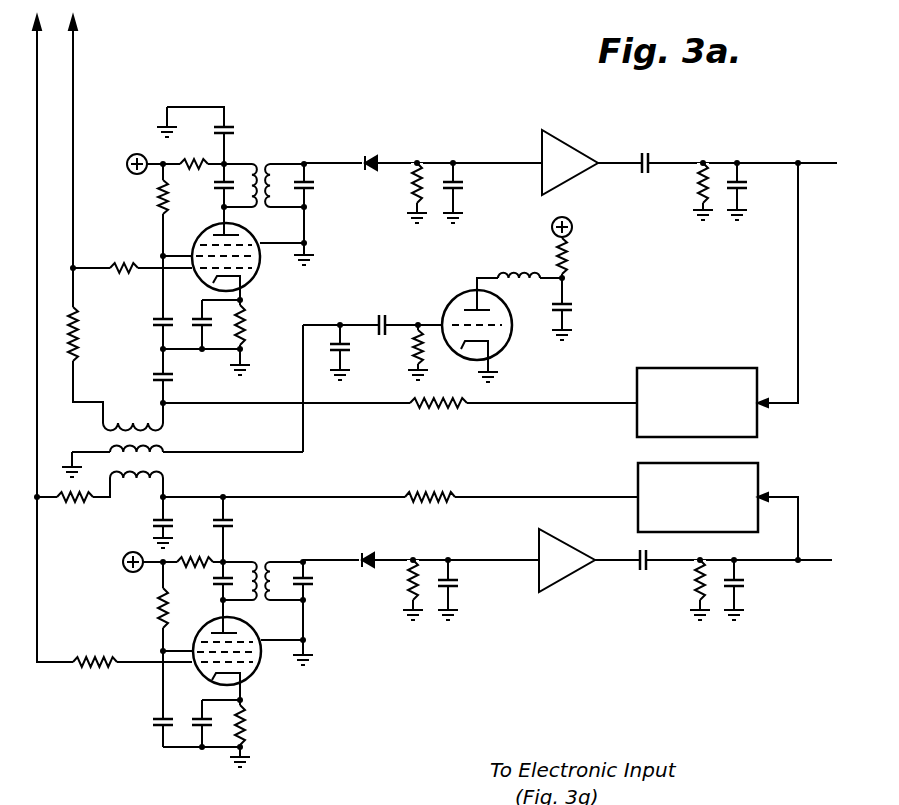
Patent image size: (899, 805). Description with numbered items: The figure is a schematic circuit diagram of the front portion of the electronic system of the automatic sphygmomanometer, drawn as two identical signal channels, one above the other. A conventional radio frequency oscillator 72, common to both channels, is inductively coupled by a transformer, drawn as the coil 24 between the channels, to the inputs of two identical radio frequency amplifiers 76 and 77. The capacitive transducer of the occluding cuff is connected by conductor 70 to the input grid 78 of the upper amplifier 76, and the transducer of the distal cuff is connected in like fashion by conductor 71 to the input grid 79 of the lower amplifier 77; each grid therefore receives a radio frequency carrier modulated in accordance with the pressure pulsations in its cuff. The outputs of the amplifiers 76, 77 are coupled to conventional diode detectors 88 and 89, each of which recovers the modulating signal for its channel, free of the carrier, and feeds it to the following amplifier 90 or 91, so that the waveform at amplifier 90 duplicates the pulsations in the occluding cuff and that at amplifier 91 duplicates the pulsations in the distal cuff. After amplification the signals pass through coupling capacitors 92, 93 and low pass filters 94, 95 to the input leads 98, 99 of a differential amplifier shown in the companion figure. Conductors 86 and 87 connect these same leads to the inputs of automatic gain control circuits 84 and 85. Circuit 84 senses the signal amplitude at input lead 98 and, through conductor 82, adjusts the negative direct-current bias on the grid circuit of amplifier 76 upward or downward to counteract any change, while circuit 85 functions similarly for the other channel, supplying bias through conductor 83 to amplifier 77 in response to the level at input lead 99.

The conductor 70 is at (73, 93).
The conductor 71 is at (37, 90).
The coupling coil 24 is at (160, 440).
The radio frequency oscillator 72 is at (584, 375).
The radio frequency amplifier 76 is at (322, 84).
The radio frequency amplifier 77 is at (224, 651).
The input grid 78 is at (248, 271).
The input grid 79 is at (245, 666).
The conductor 82 is at (372, 405).
The conductor 83 is at (371, 497).
The automatic gain control circuit 84 is at (746, 368).
The automatic gain control circuit 85 is at (758, 467).
The conductor 86 is at (798, 270).
The conductor 87 is at (799, 531).
The diode detector 88 is at (483, 141).
The diode detector 89 is at (477, 620).
The amplifier 90 is at (575, 142).
The amplifier 91 is at (560, 578).
The coupling capacitor 92 is at (650, 153).
The coupling capacitor 93 is at (648, 574).
The low pass filter 94 is at (750, 221).
The low pass filter 95 is at (748, 627).
The input lead 98 is at (813, 163).
The input lead 99 is at (820, 563).